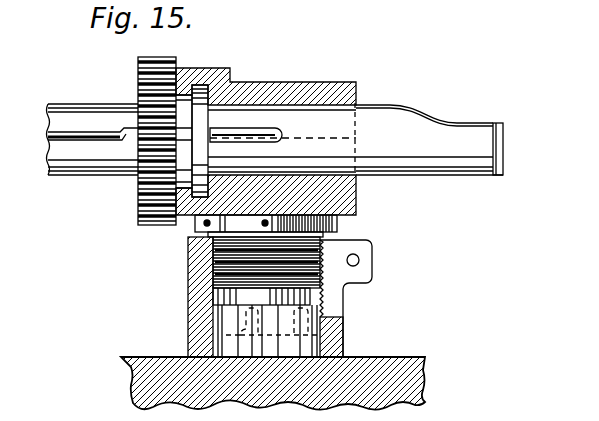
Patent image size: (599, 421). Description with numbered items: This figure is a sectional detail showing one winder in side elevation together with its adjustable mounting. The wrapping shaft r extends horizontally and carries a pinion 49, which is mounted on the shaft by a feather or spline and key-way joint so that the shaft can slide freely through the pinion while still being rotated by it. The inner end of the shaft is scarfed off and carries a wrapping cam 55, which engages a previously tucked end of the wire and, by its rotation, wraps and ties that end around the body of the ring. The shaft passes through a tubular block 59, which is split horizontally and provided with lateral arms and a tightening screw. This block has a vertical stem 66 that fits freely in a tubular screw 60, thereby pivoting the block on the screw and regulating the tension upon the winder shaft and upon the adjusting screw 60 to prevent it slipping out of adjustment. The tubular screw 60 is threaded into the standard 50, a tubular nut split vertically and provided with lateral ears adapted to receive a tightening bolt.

The pinion 49 is at (156, 193).
The tubular block 59 is at (282, 141).
The tubular screw 60 is at (337, 222).
The wrapping cam 55 is at (448, 140).
The standard 50 is at (351, 298).
The vertical stem 66 is at (247, 296).
The wrapping shaft r is at (291, 135).